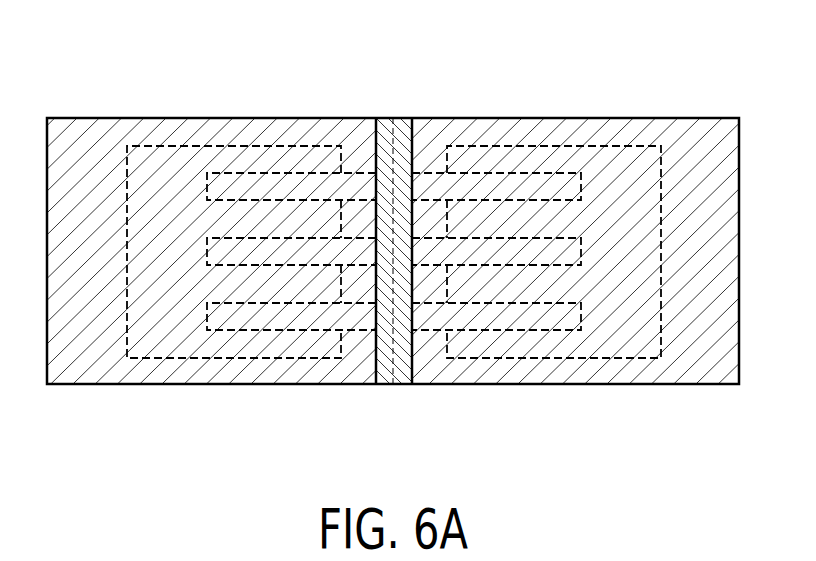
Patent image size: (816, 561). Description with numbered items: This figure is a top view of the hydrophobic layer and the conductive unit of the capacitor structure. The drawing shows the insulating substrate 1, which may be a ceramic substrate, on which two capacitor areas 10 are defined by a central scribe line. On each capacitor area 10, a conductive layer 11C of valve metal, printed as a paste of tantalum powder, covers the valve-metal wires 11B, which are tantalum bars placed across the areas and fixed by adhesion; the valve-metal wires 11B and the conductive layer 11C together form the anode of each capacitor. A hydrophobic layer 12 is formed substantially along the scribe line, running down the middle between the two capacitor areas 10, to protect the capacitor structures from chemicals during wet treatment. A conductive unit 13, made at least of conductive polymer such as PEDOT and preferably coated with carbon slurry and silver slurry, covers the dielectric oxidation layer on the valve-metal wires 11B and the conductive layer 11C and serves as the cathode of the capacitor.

The insulating substrate 1 is at (60, 38).
The capacitor area 10 is at (82, 118).
The valve-metal wire 11B is at (430, 187).
The conductive layer 11C is at (161, 158).
The hydrophobic layer 12 is at (385, 138).
The conductive unit 13 is at (91, 370).